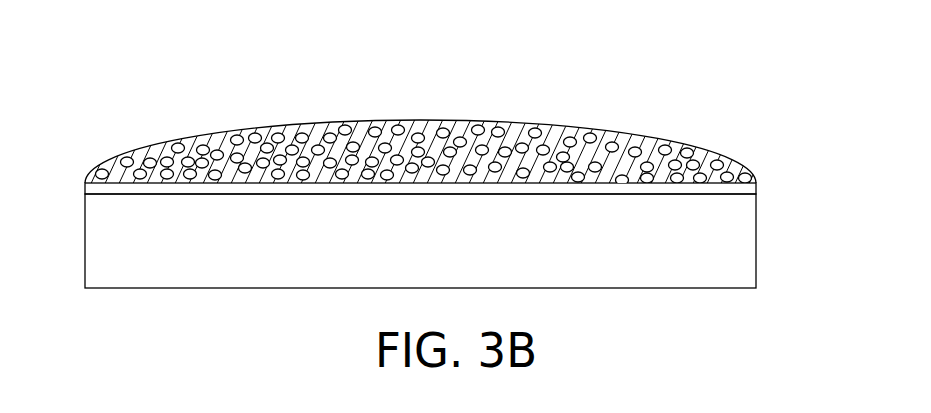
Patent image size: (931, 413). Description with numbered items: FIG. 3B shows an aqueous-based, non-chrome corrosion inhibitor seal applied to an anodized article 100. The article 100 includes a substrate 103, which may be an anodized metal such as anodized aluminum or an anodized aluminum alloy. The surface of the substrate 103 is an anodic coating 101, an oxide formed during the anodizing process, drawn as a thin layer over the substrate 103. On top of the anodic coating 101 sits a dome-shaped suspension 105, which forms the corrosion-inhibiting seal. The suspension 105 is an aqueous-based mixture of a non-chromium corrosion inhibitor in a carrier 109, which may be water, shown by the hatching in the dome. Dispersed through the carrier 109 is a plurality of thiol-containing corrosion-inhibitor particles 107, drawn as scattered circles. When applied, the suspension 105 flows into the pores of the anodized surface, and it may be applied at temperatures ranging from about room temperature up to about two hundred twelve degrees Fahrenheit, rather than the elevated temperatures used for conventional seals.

The article 100 is at (527, 99).
The anodic coating 101 is at (84, 187).
The substrate 103 is at (757, 232).
The suspension 105 is at (632, 133).
The thiol-containing corrosion-inhibitor particle 107 is at (206, 140).
The carrier 109 is at (423, 122).